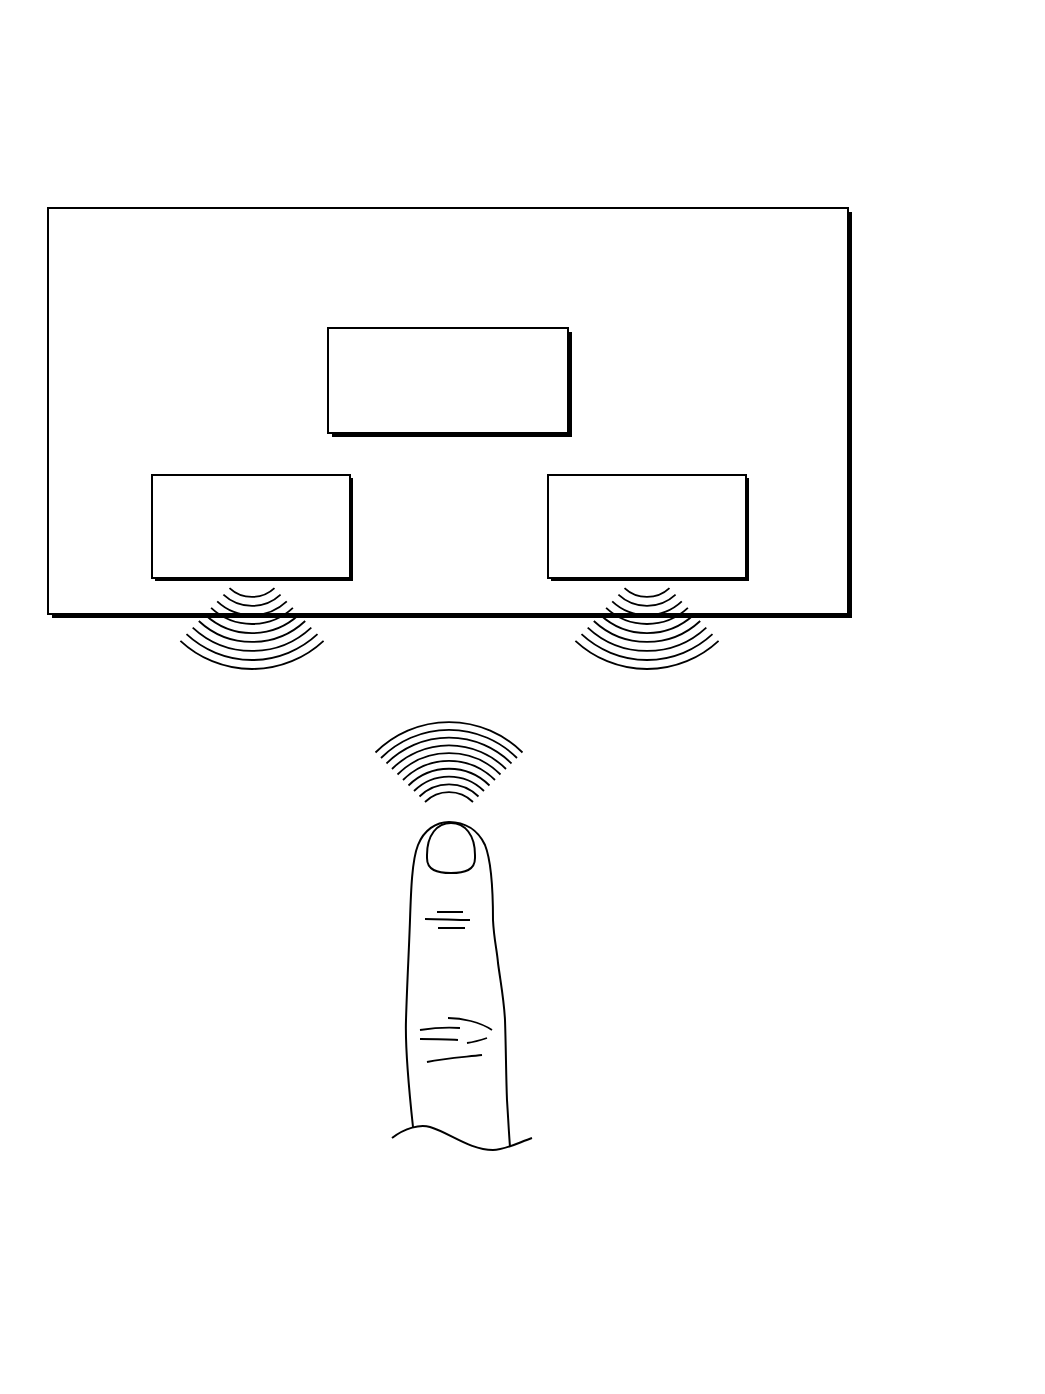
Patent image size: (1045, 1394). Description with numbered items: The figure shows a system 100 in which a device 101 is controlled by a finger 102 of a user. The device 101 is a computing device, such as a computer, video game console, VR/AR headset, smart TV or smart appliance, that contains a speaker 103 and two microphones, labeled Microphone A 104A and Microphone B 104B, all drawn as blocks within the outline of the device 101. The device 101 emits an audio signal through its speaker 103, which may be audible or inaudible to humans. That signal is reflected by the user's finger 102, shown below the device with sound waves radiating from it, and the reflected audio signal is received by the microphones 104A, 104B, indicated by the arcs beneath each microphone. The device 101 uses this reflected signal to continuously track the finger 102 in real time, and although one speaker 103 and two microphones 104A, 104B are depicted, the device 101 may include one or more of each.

The system 100 is at (489, 698).
The device 101 is at (426, 302).
The finger 102 is at (487, 970).
The speaker 103 is at (426, 419).
The microphone A 104A is at (218, 567).
The microphone B 104B is at (615, 567).